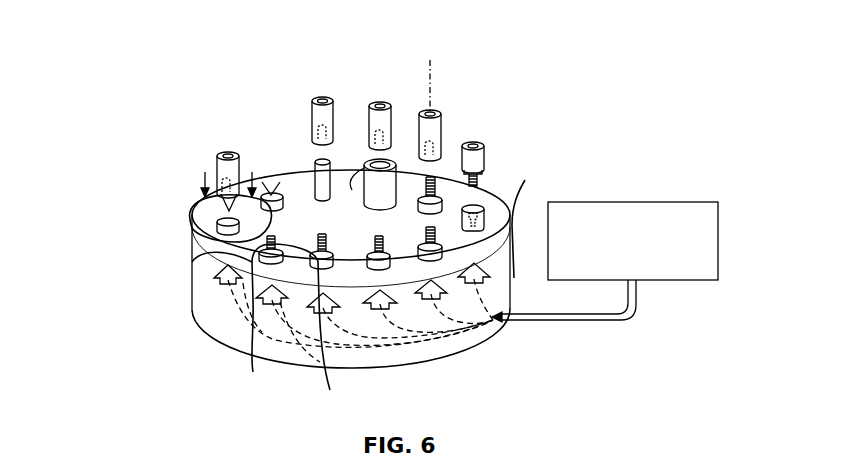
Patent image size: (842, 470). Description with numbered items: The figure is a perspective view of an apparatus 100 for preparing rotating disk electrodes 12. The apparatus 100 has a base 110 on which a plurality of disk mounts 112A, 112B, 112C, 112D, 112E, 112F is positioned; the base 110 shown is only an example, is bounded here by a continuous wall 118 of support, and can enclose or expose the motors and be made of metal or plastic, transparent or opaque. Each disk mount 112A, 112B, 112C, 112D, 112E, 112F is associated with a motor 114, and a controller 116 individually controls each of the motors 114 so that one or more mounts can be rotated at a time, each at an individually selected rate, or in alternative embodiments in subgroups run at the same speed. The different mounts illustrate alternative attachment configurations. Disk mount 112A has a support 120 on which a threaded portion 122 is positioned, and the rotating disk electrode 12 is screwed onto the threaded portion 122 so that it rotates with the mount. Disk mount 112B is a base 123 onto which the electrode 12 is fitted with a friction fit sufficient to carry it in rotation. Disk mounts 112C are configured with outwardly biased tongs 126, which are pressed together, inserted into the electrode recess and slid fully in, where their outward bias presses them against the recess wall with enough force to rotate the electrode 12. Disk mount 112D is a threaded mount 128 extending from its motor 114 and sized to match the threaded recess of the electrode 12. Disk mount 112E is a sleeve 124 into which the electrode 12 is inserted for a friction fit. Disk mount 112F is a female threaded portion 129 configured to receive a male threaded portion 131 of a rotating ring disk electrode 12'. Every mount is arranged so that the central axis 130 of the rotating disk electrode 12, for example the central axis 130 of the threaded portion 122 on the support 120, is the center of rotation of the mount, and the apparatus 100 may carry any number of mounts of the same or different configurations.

The apparatus 100 is at (98, 156).
The rotating disk electrode 12 is at (326, 108).
The rotating ring disk electrode 12' is at (528, 133).
The base 110 is at (190, 266).
The disk mount 112A is at (440, 205).
The disk mount 112B is at (310, 181).
The disk mount 112C is at (218, 226).
The disk mount 112D is at (330, 386).
The disk mount 112E is at (395, 175).
The disk mount 112F is at (486, 222).
The motor 114 is at (312, 345).
The controller 116 is at (702, 234).
The continuous wall 118 is at (192, 310).
The support 120 is at (478, 150).
The threaded portion 122 is at (497, 320).
The base 123 is at (314, 168).
The sleeve 124 is at (367, 190).
The tongs 126 is at (268, 178).
The threaded mount 128 is at (260, 350).
The female threaded portion 129 is at (514, 278).
The central axis 130 is at (430, 80).
The male threaded portion 131 is at (485, 180).